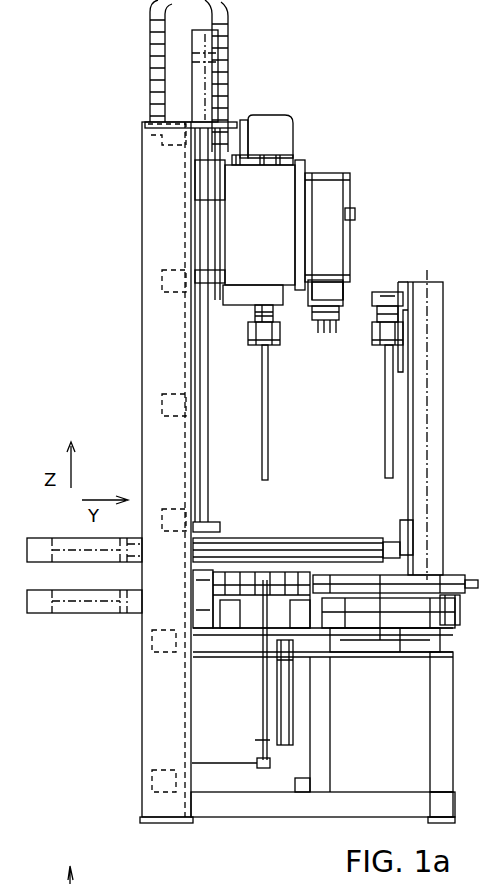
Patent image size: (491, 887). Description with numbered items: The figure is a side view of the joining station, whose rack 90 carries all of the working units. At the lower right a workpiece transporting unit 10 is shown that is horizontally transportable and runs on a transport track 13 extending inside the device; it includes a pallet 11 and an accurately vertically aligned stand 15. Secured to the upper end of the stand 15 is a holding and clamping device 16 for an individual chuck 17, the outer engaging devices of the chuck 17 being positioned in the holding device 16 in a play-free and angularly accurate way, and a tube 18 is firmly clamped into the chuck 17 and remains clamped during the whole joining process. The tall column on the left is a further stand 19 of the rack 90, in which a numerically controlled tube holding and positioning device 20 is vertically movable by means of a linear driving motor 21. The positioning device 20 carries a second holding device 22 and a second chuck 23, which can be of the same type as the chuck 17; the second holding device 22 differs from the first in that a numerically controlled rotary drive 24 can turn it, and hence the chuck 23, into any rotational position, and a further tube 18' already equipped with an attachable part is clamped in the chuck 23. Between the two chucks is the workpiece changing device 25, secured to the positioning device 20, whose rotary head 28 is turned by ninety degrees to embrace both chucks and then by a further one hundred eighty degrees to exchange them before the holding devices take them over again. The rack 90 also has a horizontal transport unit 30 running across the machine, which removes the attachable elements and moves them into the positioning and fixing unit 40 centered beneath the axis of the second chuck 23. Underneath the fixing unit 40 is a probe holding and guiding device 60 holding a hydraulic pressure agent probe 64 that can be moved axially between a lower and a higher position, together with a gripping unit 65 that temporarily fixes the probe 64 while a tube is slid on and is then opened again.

The workpiece transporting unit 10 is at (455, 569).
The pallet 11 is at (462, 608).
The transport track 13 is at (402, 640).
The stand 15 is at (436, 286).
The holding and clamping device 16 is at (375, 315).
The chuck 17 is at (380, 345).
The tube 18 is at (368, 411).
The further tube 18' is at (245, 412).
The further stand 19 is at (163, 360).
The tube holding and positioning device 20 is at (172, 232).
The linear driving motor 21 is at (215, 78).
The second holding device 22 is at (253, 322).
The second chuck 23 is at (258, 345).
The rotary drive 24 is at (270, 130).
The workpiece changing device 25 is at (330, 186).
The rotary head 28 is at (325, 336).
The horizontal transport unit 30 is at (270, 528).
The positioning and fixing unit 40 is at (279, 566).
The probe holding and guiding device 60 is at (250, 740).
The hydraulic pressure agent probe 64 is at (250, 698).
The gripping unit 65 is at (262, 650).
The rack 90 is at (160, 668).